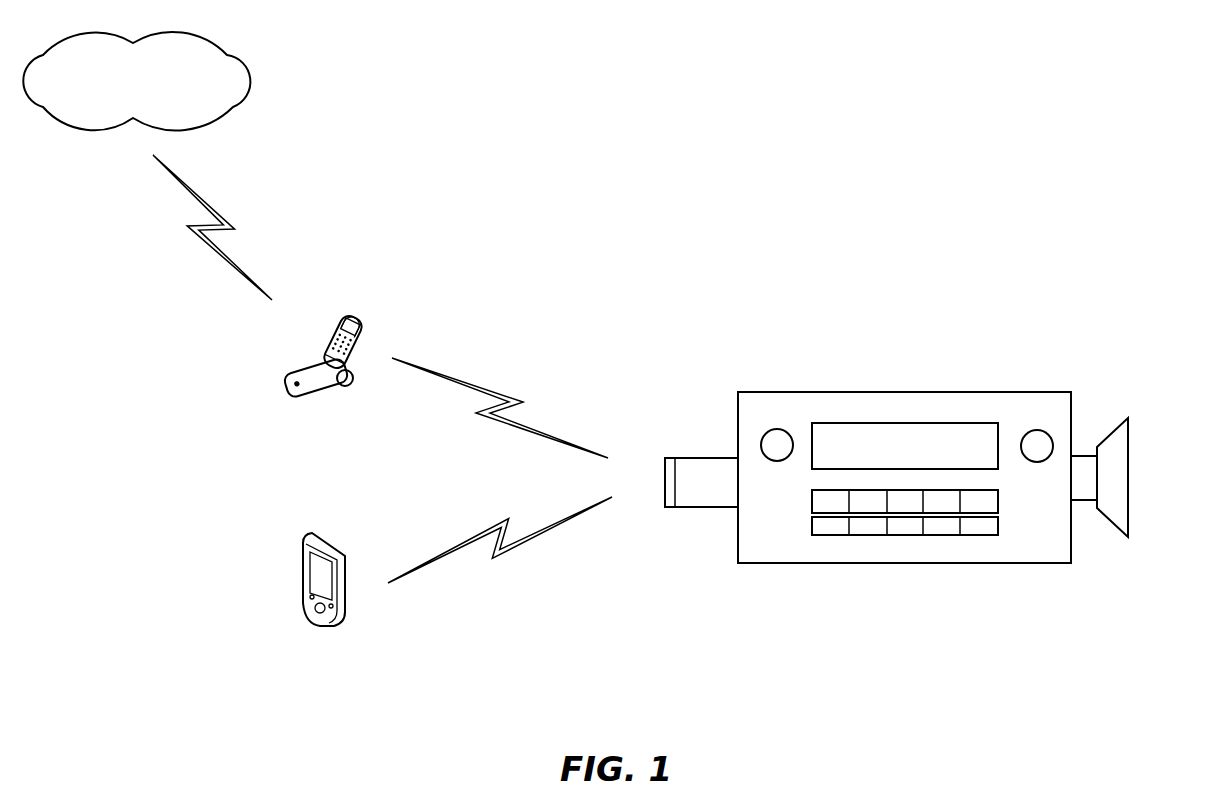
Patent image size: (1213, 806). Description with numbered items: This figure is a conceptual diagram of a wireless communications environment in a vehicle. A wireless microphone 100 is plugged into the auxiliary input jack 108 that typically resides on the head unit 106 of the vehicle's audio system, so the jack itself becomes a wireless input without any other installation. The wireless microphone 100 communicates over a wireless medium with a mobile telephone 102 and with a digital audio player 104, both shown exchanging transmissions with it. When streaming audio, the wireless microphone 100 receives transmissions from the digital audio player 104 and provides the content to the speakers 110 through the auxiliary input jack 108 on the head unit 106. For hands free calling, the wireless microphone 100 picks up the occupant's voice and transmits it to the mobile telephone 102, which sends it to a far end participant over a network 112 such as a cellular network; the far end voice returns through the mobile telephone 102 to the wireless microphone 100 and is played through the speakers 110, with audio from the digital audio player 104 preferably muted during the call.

The wireless microphone 100 is at (710, 457).
The mobile telephone 102 is at (358, 315).
The digital audio player 104 is at (330, 540).
The head unit 106 is at (897, 391).
The auxiliary input jack 108 is at (745, 481).
The speakers 110 is at (1128, 465).
The network 112 is at (263, 77).